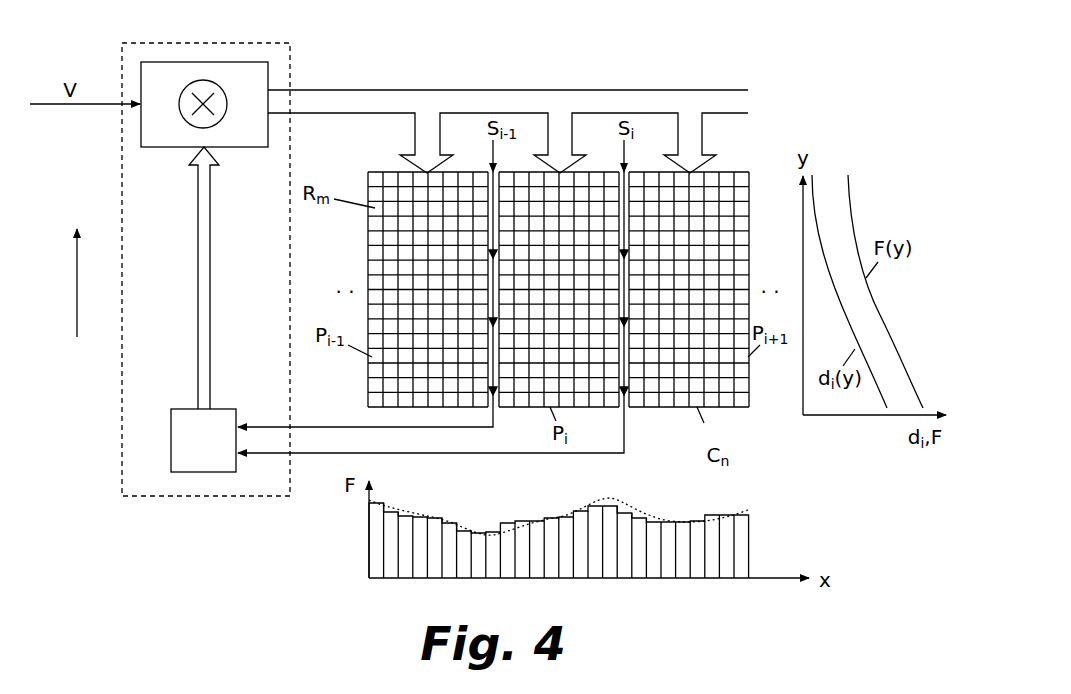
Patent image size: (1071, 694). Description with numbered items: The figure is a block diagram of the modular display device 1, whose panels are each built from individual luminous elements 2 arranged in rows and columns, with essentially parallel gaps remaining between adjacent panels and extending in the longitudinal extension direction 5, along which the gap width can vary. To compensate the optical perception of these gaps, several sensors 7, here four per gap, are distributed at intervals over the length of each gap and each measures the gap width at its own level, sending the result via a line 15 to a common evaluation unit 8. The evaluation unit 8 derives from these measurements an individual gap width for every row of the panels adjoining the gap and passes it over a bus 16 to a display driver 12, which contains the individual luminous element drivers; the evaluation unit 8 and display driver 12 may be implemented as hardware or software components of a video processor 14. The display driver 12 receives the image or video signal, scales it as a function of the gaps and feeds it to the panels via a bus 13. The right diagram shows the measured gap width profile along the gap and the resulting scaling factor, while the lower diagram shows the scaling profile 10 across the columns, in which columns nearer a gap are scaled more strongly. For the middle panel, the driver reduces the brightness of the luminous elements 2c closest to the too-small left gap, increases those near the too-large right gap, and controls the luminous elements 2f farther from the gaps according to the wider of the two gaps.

The modular display device 1 is at (822, 62).
The luminous elements 2 is at (377, 222).
The luminous elements closer to the gap 2c is at (522, 400).
The luminous elements further away from the gap 2f is at (536, 282).
The longitudinal extension direction 5 is at (77, 284).
The sensor 7 is at (625, 397).
The evaluation unit 8 is at (180, 409).
The scaling profile 10 is at (738, 512).
The display driver 12 is at (179, 149).
The bus 13 is at (712, 97).
The video processor 14 is at (157, 497).
The line 15 is at (303, 452).
The bus 16 is at (201, 341).